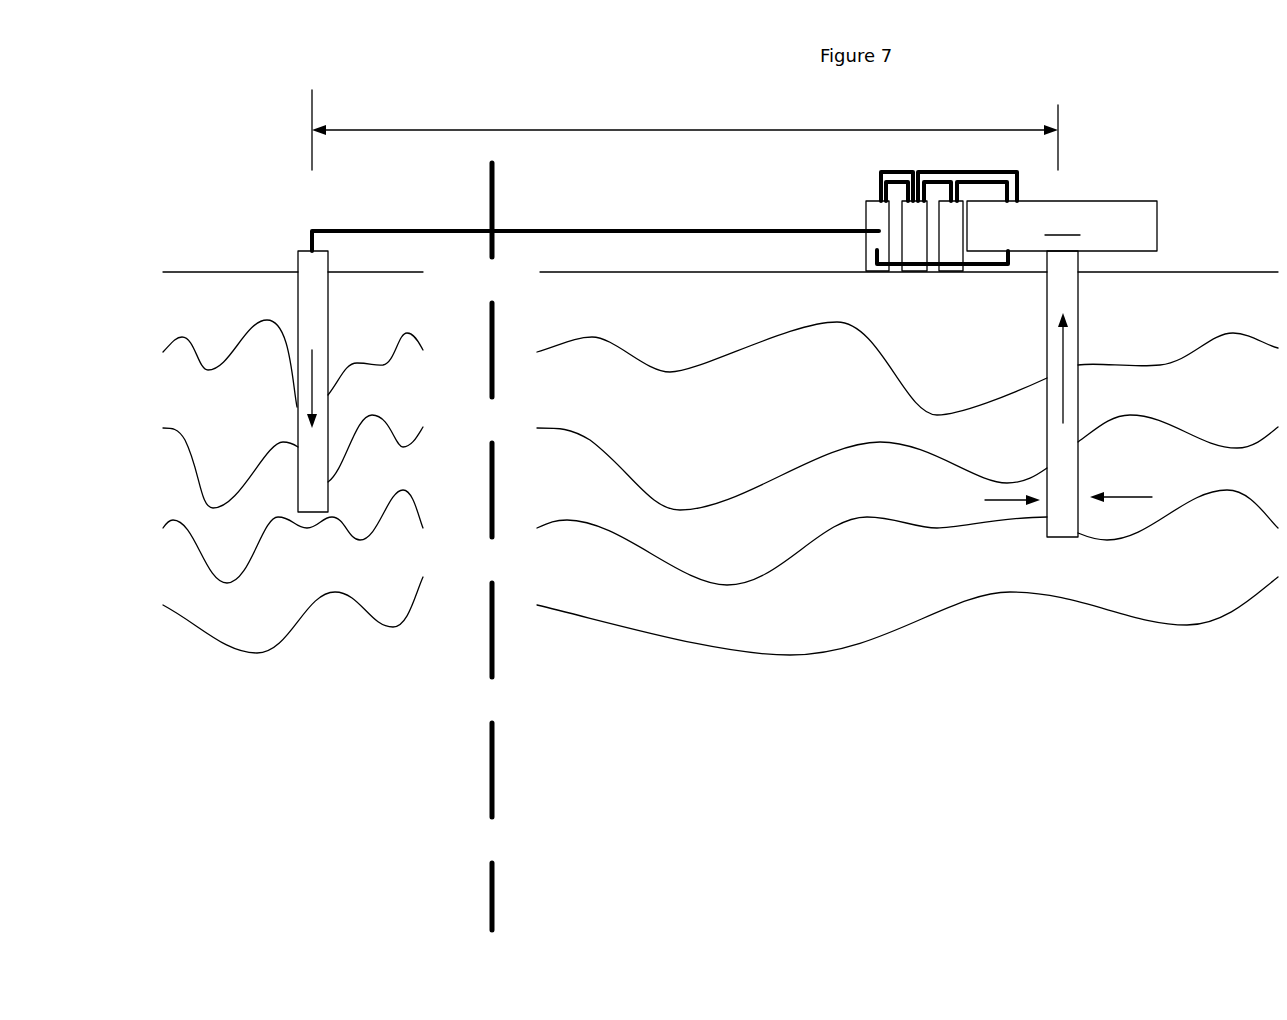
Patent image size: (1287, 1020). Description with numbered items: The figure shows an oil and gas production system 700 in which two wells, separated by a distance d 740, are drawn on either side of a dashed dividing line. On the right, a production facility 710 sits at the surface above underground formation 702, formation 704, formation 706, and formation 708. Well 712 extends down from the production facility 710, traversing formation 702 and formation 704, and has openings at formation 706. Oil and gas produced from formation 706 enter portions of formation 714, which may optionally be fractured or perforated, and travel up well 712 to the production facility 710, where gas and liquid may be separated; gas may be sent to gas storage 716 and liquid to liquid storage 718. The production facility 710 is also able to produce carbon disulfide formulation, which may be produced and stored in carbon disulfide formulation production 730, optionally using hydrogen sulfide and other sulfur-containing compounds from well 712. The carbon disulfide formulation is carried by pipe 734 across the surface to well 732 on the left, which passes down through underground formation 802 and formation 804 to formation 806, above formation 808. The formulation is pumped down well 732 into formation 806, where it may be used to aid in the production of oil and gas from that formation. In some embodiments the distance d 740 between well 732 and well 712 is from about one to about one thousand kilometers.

The system 700 is at (685, 92).
The underground formation 702 is at (907, 364).
The formation 704 is at (907, 444).
The formation 706 is at (907, 515).
The formation 708 is at (907, 590).
The production facility 710 is at (1017, 218).
The well 712 is at (1078, 297).
The portions of formation 714 is at (1108, 507).
The gas storage 716 is at (947, 220).
The liquid storage 718 is at (917, 220).
The carbon disulfide formulation production 730 is at (874, 212).
The well 732 is at (298, 292).
The pipe 734 is at (625, 230).
The distance d 740 is at (312, 107).
The underground formation 802 is at (293, 356).
The formation 804 is at (293, 444).
The formation 806 is at (293, 514).
The formation 808 is at (293, 600).